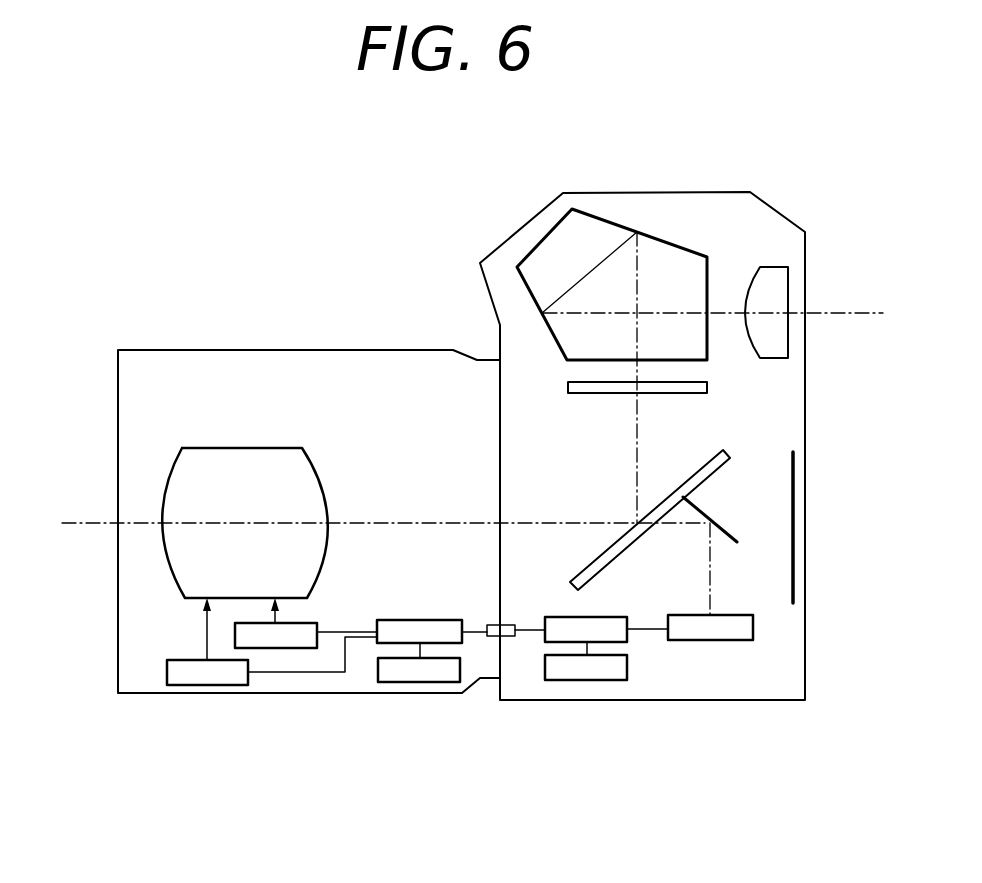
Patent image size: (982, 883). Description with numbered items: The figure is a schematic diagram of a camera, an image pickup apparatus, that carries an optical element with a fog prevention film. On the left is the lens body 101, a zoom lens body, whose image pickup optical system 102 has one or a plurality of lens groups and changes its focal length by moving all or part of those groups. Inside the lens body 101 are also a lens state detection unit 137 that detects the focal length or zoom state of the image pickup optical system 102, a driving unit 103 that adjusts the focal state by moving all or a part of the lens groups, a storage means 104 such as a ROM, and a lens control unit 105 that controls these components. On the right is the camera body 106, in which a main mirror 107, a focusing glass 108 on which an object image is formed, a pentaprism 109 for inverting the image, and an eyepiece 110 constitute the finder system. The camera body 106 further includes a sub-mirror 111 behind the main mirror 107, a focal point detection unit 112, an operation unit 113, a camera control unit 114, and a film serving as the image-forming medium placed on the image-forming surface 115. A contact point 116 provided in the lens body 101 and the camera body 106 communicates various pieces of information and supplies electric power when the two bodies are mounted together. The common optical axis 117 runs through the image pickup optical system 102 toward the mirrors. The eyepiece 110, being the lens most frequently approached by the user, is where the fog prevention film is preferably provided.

The lens body 101 is at (183, 352).
The image pickup optical system 102 is at (248, 457).
The driving unit 103 is at (207, 695).
The storage means 104 is at (418, 677).
The lens control unit 105 is at (383, 640).
The camera body 106 is at (678, 202).
The main mirror 107 is at (690, 475).
The focusing glass 108 is at (708, 386).
The pentaprism 109 is at (683, 255).
The eyepiece 110 is at (790, 280).
The sub-mirror 111 is at (725, 540).
The focal point detection unit 112 is at (710, 635).
The operation unit 113 is at (592, 670).
The camera control unit 114 is at (548, 640).
The image-forming surface 115 is at (797, 477).
The contact point 116 is at (495, 636).
The optical axis 117 is at (92, 527).
The lens state detection unit 137 is at (273, 645).